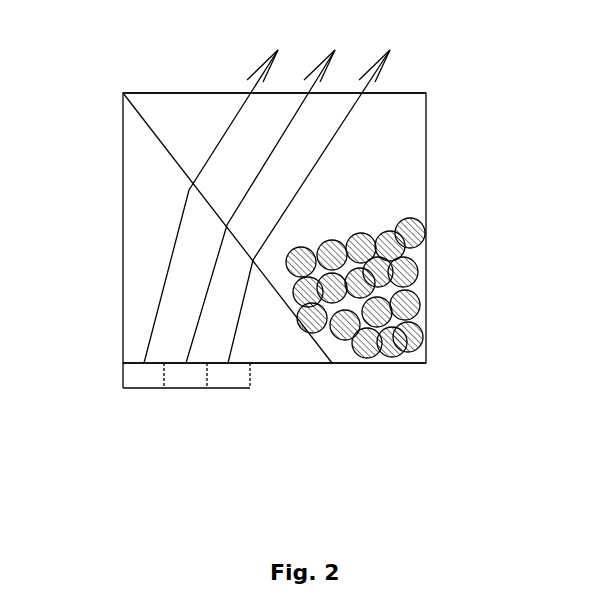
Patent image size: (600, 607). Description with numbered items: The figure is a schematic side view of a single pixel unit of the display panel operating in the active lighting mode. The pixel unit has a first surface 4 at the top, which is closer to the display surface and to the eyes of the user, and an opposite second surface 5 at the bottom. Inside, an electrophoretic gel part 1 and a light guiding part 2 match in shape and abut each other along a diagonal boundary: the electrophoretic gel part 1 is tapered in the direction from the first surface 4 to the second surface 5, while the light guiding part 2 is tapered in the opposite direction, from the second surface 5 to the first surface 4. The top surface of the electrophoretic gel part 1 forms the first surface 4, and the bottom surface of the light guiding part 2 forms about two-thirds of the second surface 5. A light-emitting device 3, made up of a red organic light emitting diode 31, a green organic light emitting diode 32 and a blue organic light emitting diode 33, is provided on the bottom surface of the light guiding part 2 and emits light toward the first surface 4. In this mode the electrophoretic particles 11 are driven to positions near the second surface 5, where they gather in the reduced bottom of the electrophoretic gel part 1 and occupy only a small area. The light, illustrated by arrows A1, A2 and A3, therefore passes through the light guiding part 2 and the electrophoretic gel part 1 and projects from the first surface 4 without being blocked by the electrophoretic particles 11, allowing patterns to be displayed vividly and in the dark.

The electrophoretic gel part 1 is at (325, 207).
The light guiding part 2 is at (173, 191).
The light-emitting device 3 is at (233, 447).
The first surface 4 is at (205, 93).
The second surface 5 is at (288, 363).
The electrophoretic particles 11 is at (422, 328).
The red organic light emitting diode 31 is at (143, 375).
The green organic light emitting diode 32 is at (192, 377).
The blue organic light emitting diode 33 is at (290, 419).
The arrow A1 is at (228, 191).
The arrow A2 is at (276, 191).
The arrow A3 is at (324, 191).